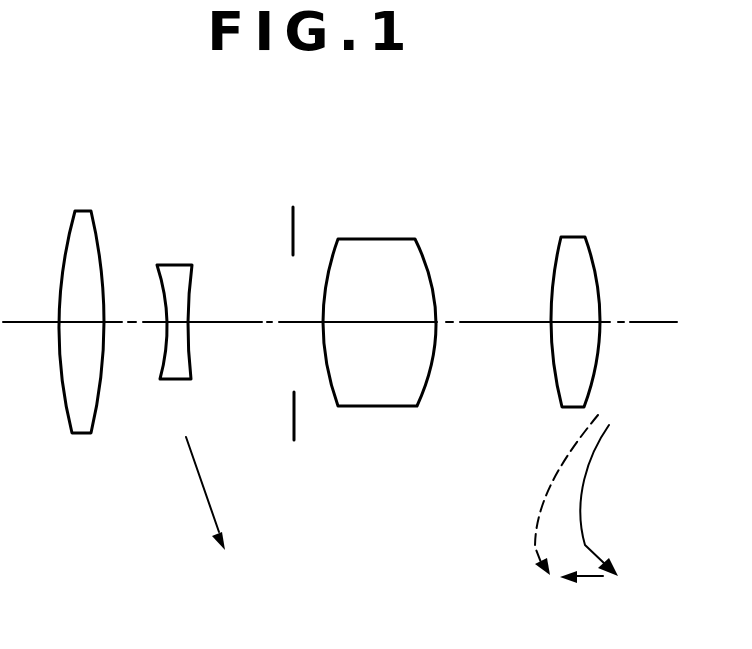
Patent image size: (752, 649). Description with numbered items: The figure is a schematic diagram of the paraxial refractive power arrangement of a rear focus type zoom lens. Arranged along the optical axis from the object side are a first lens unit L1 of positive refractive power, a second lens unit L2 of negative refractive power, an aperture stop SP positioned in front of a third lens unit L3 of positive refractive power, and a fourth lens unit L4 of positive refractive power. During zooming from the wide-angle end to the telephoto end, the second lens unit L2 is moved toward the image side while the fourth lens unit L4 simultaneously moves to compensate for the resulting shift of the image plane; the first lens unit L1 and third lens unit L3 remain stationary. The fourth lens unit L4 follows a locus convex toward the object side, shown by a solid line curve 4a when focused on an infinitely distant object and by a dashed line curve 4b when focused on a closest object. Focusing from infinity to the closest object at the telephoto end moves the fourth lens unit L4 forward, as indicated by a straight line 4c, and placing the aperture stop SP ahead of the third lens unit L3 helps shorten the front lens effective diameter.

The first lens unit L1 is at (86, 210).
The second lens unit L2 is at (174, 264).
The aperture stop SP is at (293, 225).
The third lens unit L3 is at (433, 197).
The fourth lens unit L4 is at (570, 237).
The solid line curve 4a is at (578, 500).
The dashed line curve 4b is at (535, 547).
The straight line 4c is at (590, 578).